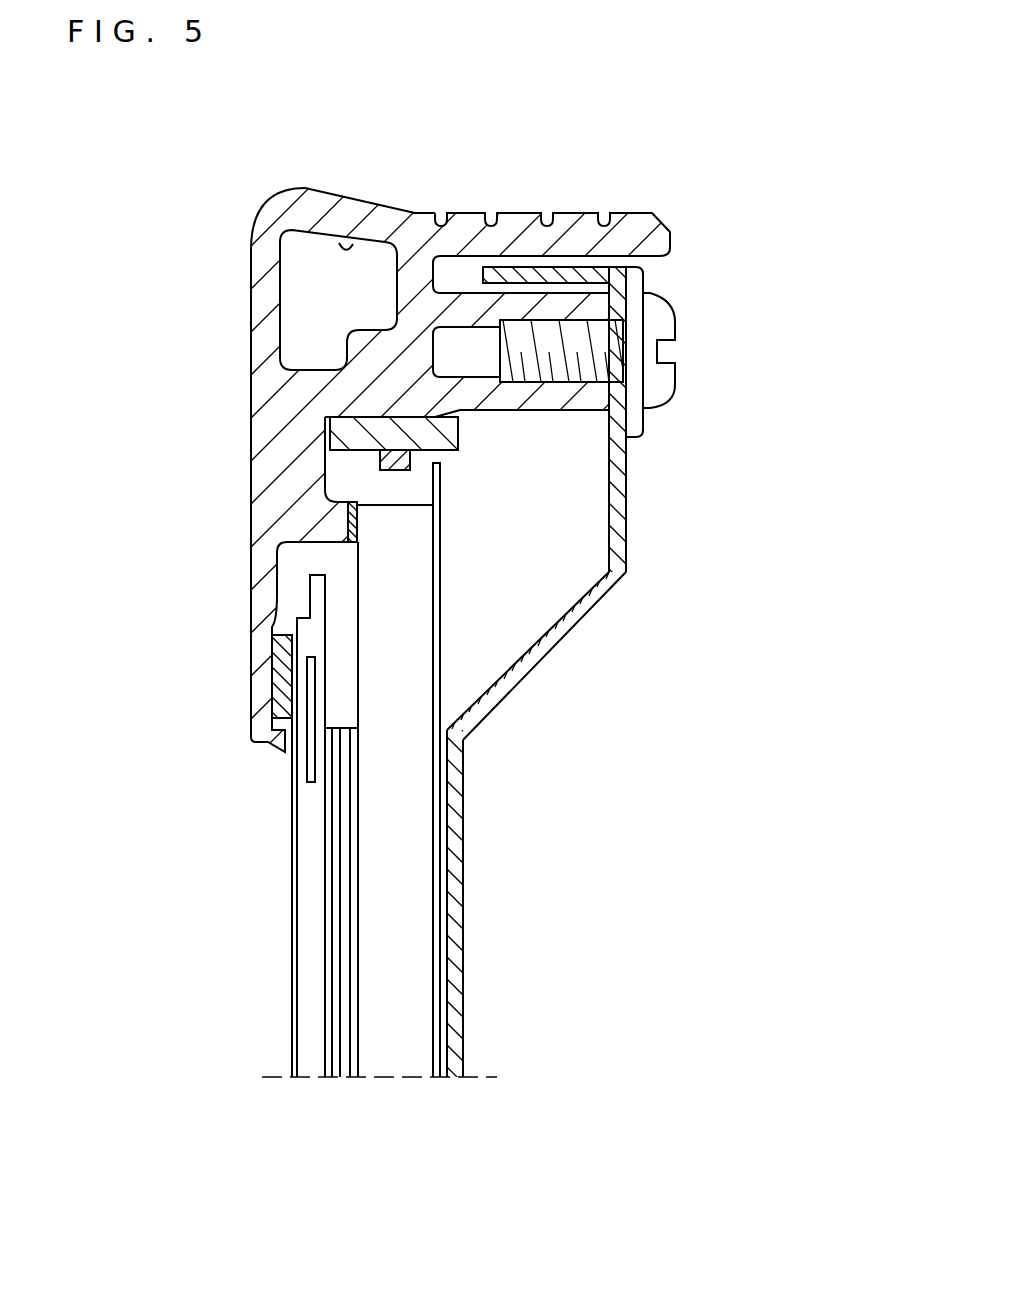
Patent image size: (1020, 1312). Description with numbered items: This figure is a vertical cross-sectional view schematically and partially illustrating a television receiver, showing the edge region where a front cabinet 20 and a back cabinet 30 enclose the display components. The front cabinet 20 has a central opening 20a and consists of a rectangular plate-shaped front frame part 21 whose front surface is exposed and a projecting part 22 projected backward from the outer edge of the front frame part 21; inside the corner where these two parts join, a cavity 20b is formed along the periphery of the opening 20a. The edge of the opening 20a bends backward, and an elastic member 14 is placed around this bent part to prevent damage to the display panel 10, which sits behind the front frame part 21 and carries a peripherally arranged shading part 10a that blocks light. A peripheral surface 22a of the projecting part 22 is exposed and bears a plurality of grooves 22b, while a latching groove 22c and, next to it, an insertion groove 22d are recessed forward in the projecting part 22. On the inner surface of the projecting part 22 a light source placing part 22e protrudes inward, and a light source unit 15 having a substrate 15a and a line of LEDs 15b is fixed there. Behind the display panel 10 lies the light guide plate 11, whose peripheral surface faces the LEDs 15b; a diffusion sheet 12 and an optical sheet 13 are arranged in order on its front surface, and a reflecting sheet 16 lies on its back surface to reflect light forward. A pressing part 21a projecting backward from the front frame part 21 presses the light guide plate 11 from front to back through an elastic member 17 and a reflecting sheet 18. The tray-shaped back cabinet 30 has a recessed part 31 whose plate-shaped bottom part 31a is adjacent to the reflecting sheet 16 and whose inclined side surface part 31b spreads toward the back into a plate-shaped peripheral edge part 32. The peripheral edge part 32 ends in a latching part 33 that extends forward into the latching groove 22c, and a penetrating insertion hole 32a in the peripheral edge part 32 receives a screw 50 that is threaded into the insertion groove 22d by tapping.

The display panel 10 is at (302, 925).
The shading part 10a is at (309, 775).
The light guide plate 11 is at (398, 1068).
The diffusion sheet 12 is at (343, 1078).
The optical sheet 13 is at (328, 1065).
The elastic member 14 is at (282, 677).
The light source unit 15 is at (464, 447).
The substrate 15a is at (337, 437).
The LED 15b is at (390, 470).
The reflecting sheet 16 is at (437, 1075).
The elastic member 17 is at (360, 535).
The reflecting sheet 18 is at (330, 543).
The front cabinet 20 is at (249, 300).
The opening 20a is at (276, 740).
The cavity 20b is at (346, 246).
The front frame part 21 is at (263, 265).
The pressing part 21a is at (340, 518).
The projecting part 22 is at (569, 222).
The peripheral surface 22a is at (643, 213).
The grooves 22b is at (547, 212).
The latching groove 22c is at (662, 263).
The insertion groove 22d is at (578, 372).
The light source placing part 22e is at (388, 413).
The back cabinet 30 is at (644, 473).
The recessed part 31 is at (566, 776).
The bottom part 31a is at (458, 858).
The side surface part 31b is at (555, 640).
The peripheral edge part 32 is at (628, 488).
The penetrating insertion hole 32a is at (637, 327).
The latching part 33 is at (580, 268).
The screw 50 is at (668, 328).